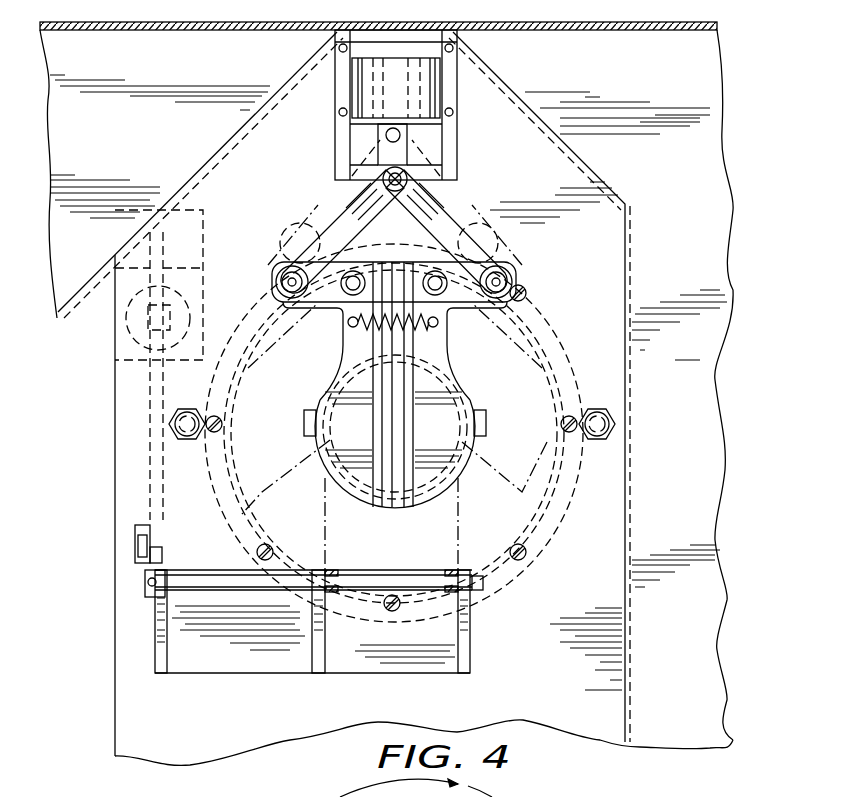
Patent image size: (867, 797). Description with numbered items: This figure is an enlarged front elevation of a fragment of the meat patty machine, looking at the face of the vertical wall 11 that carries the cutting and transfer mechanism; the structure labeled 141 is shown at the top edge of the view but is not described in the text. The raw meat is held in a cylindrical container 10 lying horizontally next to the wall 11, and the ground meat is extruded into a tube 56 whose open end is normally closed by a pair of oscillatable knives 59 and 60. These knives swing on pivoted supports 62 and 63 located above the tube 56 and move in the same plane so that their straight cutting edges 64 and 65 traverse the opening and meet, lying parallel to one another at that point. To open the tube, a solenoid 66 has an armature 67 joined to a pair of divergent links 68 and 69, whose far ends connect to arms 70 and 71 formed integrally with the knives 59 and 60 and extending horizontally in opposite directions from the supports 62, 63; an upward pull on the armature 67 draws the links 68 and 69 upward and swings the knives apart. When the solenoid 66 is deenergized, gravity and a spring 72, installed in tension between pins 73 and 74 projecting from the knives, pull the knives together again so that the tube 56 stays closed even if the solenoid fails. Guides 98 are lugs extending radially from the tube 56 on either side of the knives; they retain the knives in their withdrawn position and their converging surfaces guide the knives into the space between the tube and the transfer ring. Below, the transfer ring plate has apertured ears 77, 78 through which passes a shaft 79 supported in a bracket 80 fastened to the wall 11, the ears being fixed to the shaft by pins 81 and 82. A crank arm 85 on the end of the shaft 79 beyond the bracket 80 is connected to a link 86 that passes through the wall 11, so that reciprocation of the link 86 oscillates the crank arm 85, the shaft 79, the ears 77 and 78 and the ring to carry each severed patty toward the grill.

The mounting plate 141 is at (609, 23).
The vertical wall 11 is at (231, 725).
The container 10 is at (242, 523).
The solenoid 66 is at (430, 94).
The armature 67 is at (404, 151).
The link 68 is at (345, 203).
The link 69 is at (452, 205).
The pivoted support 62 is at (355, 273).
The pivoted support 63 is at (433, 273).
The arm 70 is at (313, 300).
The arm 71 is at (458, 294).
The spring 72 is at (343, 340).
The pin 73 is at (350, 327).
The pin 74 is at (436, 326).
The tube 56 is at (324, 478).
The guide 98 is at (303, 419).
The knife 59 is at (364, 436).
The knife 60 is at (446, 436).
The cutting edge 64 is at (387, 508).
The cutting edge 65 is at (398, 508).
The link 86 is at (138, 543).
The crank arm 85 is at (146, 568).
The shaft 79 is at (252, 583).
The bracket 80 is at (167, 648).
The ear 77 is at (328, 600).
The ear 78 is at (453, 598).
The pin 81 is at (333, 590).
The pin 82 is at (450, 583).